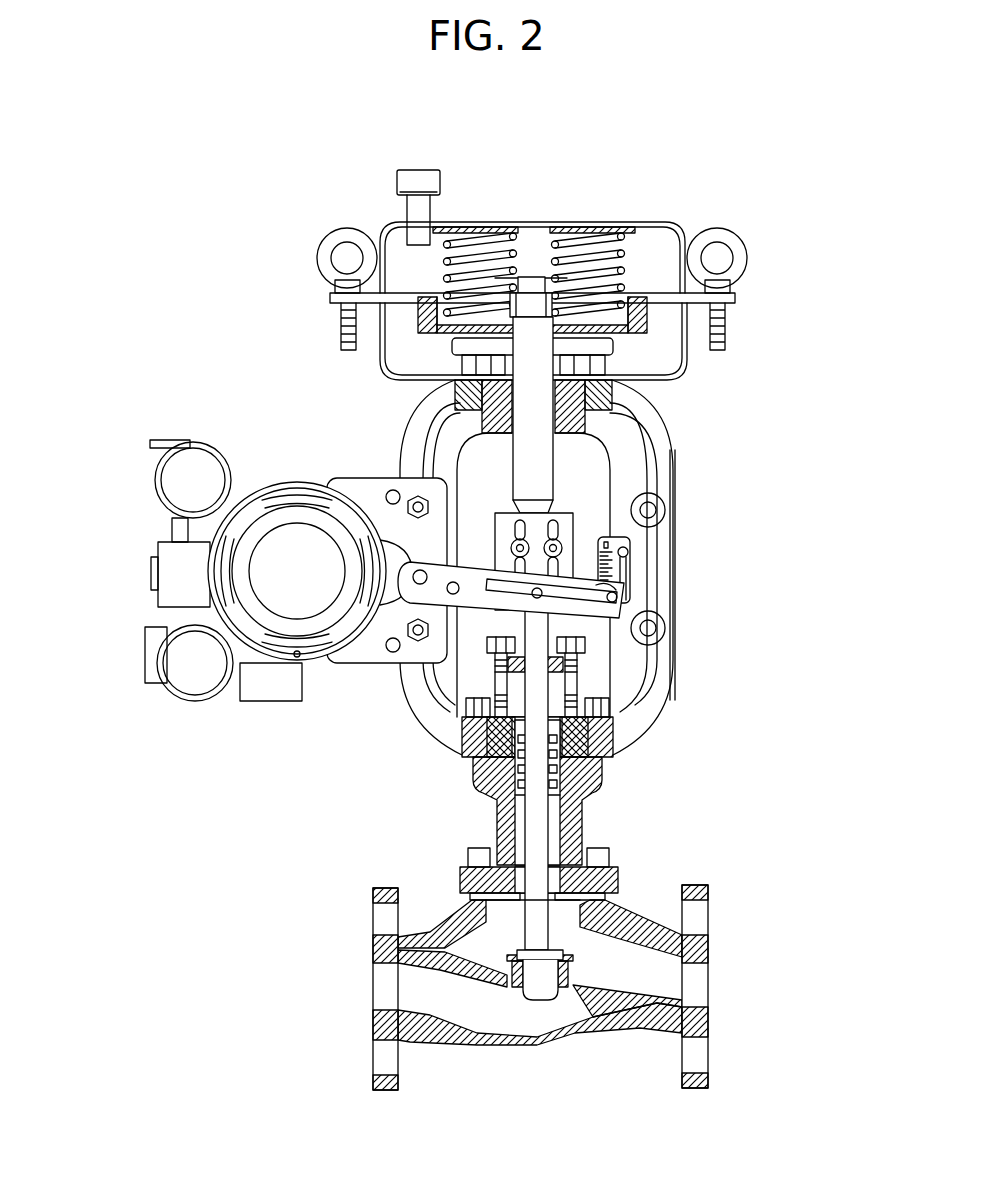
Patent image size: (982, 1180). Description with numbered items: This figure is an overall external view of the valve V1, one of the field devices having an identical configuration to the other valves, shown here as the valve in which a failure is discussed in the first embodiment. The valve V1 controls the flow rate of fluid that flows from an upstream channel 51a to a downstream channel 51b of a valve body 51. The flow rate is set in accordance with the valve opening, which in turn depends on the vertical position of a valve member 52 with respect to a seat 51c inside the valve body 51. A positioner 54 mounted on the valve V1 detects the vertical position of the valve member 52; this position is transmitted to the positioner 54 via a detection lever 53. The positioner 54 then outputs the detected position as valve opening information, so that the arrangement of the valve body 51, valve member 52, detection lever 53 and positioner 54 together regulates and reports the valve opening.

The valve V1 is at (422, 114).
The valve body 51 is at (748, 1054).
The upstream channel 51a is at (708, 983).
The downstream channel 51b is at (372, 983).
The seat 51c is at (502, 978).
The valve member 52 is at (540, 982).
The detection lever 53 is at (588, 618).
The positioner 54 is at (150, 521).